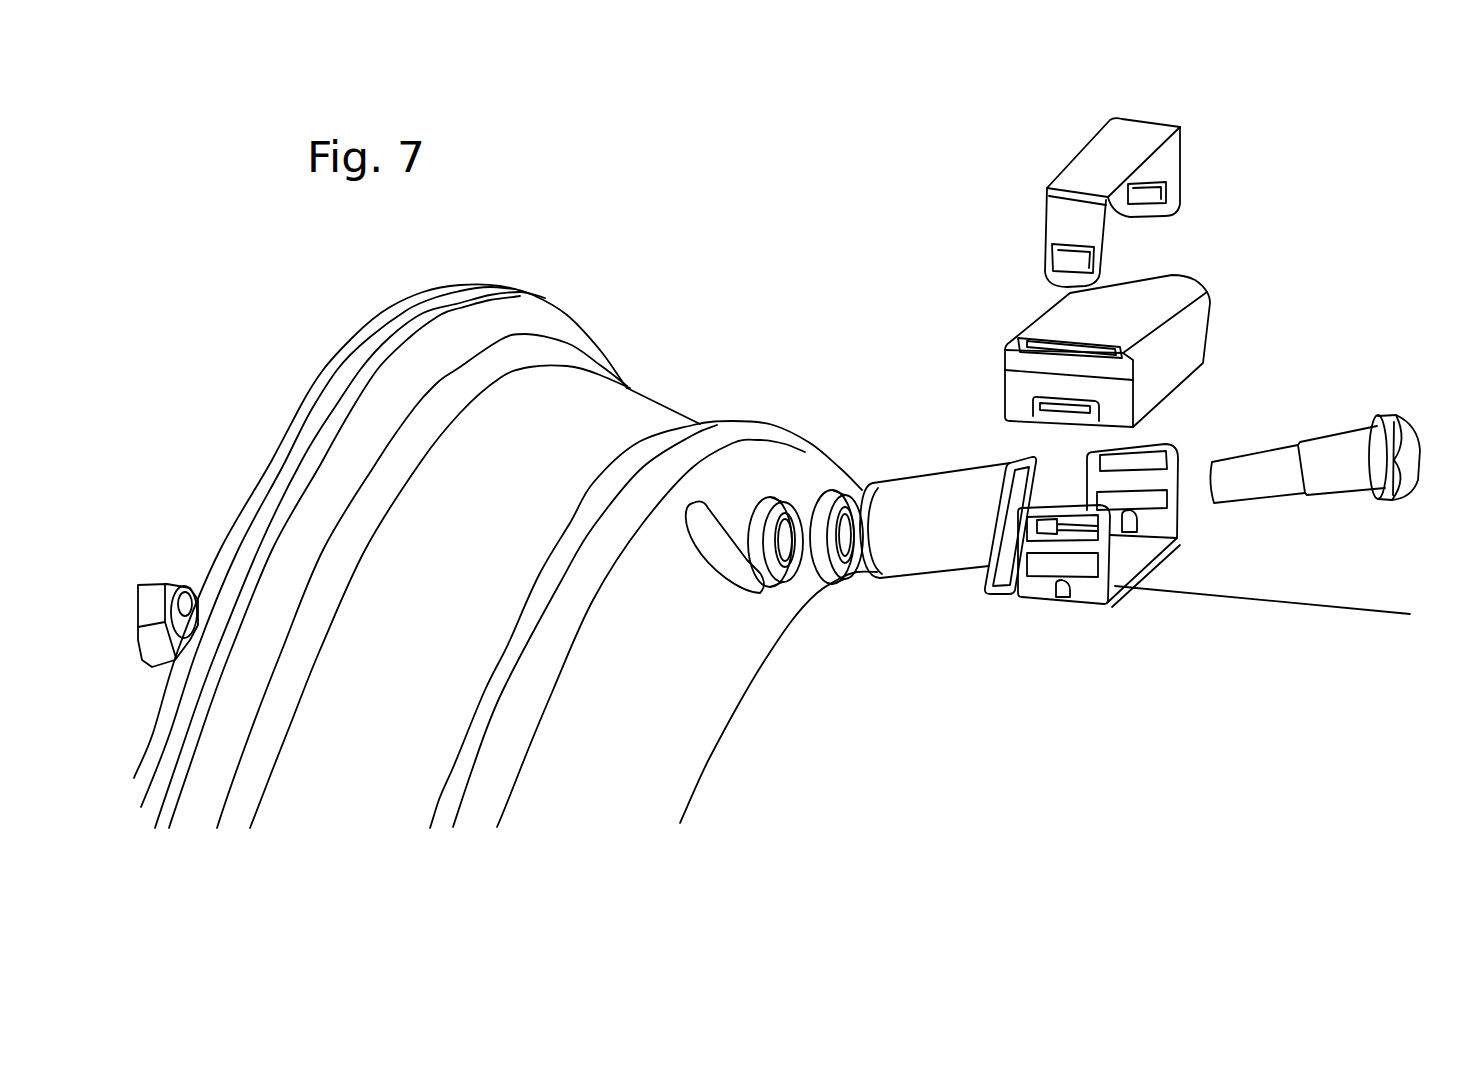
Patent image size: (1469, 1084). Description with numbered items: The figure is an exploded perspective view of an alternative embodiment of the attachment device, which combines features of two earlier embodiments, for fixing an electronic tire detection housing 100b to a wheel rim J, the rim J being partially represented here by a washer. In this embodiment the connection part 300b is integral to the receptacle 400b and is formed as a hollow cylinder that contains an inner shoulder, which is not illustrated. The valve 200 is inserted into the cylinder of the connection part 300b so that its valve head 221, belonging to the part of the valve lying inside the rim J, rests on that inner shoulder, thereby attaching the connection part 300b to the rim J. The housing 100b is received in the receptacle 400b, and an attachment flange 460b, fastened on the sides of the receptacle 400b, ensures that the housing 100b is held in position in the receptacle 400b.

The rim J is at (727, 472).
The connection part 300b is at (923, 562).
The receptacle 400b is at (1123, 575).
The housing 100b is at (1187, 295).
The attachment flange 460b is at (1122, 138).
The valve 200 is at (1300, 517).
The valve head 221 is at (1373, 435).